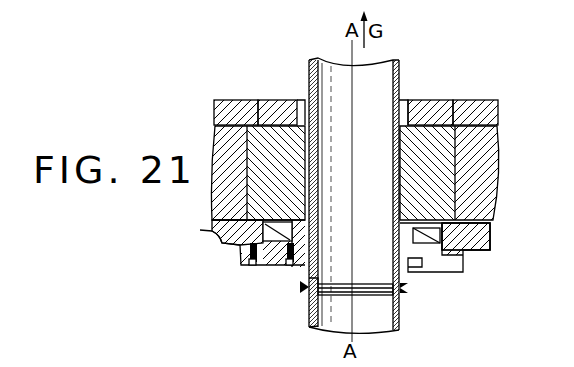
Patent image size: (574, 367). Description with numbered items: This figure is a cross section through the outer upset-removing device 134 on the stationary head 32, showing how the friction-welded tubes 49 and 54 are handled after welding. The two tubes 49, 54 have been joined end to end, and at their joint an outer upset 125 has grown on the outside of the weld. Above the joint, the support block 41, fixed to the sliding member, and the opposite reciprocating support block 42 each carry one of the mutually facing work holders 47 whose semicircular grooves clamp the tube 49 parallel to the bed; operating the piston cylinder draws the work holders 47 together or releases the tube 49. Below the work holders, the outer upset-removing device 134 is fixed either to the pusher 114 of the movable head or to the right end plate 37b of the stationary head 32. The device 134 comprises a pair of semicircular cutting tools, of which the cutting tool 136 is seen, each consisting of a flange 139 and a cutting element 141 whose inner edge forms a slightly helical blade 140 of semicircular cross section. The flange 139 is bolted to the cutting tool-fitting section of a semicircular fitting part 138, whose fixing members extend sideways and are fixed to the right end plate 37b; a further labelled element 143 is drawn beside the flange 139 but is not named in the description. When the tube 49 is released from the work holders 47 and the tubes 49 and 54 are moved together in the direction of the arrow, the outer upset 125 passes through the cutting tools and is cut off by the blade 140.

The stationary head 32 is at (221, 101).
The work holder 47 is at (258, 107).
The tube 49 is at (318, 76).
The support block 42 is at (212, 140).
The support block 41 is at (490, 170).
The pusher 114 is at (212, 232).
The right end plate 37b is at (350, 242).
The fitting part 138 is at (455, 272).
The flange 139 is at (276, 268).
The pin 143 is at (252, 268).
The outer upset-removing device 134 is at (260, 277).
The cutting tool 136 is at (303, 280).
The outer upset 125 is at (400, 289).
The blade 140 is at (312, 280).
The cutting element 141 is at (306, 280).
The tube 54 is at (306, 327).